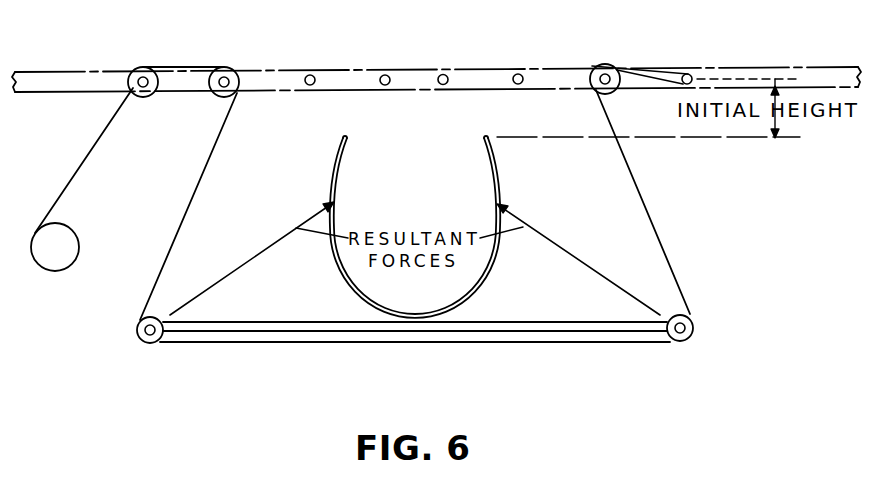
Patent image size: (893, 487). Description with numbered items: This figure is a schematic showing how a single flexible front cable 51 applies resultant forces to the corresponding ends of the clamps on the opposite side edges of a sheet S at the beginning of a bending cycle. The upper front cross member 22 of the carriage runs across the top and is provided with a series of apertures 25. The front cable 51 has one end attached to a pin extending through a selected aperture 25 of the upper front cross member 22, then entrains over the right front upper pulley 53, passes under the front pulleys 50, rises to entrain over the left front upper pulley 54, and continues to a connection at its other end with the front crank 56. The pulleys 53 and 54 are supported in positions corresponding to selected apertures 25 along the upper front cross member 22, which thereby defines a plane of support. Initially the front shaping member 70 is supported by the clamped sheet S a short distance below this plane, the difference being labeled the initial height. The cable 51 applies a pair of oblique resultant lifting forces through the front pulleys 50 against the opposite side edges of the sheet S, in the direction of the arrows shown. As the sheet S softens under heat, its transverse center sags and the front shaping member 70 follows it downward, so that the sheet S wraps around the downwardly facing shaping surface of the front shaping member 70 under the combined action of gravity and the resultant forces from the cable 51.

The upper front cross member 22 is at (284, 77).
The apertures 25 is at (441, 75).
The front pulleys 50 is at (137, 333).
The front cable 51 is at (221, 131).
The right front upper pulley 53 is at (608, 94).
The left front upper pulley 54 is at (222, 97).
The front crank 56 is at (77, 228).
The front shaping member 70 is at (346, 285).
The sheet S is at (532, 322).